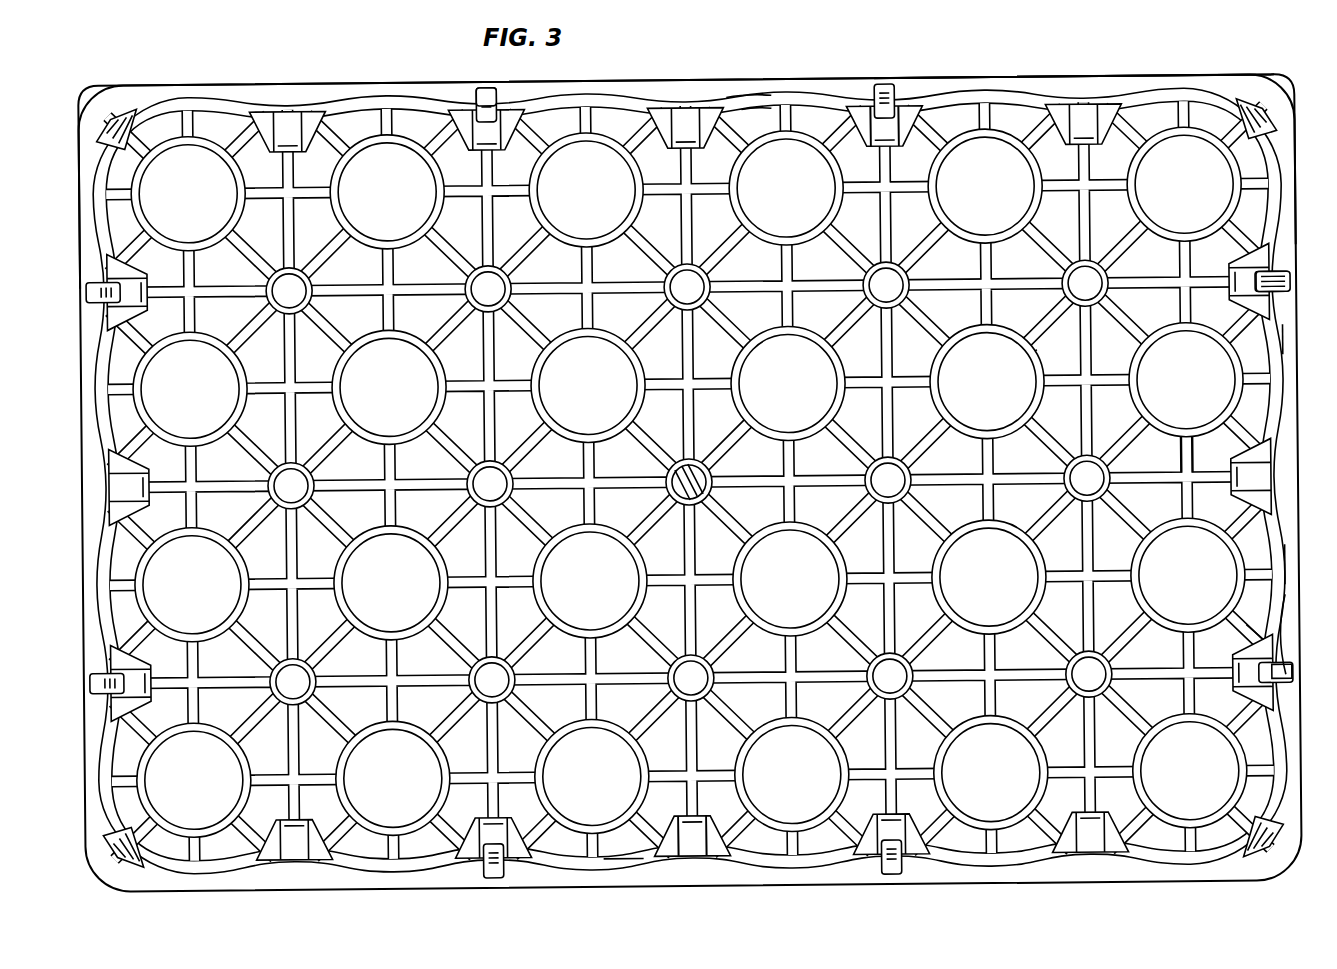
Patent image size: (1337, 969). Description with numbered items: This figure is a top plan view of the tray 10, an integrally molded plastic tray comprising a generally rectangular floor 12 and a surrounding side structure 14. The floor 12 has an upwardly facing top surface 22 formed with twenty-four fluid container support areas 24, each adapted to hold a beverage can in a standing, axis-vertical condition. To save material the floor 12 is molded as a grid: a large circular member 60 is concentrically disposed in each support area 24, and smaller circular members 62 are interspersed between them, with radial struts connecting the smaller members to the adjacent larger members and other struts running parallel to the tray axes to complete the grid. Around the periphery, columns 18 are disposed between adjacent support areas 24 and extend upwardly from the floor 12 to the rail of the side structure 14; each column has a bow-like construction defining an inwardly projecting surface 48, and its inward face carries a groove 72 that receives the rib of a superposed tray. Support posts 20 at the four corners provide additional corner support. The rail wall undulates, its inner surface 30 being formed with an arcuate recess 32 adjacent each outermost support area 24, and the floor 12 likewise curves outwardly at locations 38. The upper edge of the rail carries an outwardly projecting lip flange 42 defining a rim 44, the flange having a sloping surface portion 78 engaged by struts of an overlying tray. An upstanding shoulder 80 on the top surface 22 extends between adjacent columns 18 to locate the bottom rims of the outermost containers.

The tray 10 is at (1136, 48).
The floor 12 is at (1232, 251).
The side structure 14 is at (990, 80).
The columns 18 is at (882, 130).
The support posts 20 is at (1266, 120).
The top surface 22 is at (1186, 460).
The fluid container support areas 24 is at (556, 200).
The inner surface 30 is at (742, 104).
The arcuate recess 32 is at (765, 110).
The outwardly curving locations 38 is at (1285, 346).
The lip flange 42 is at (633, 86).
The rim 44 is at (740, 94).
The projecting surface 48 is at (876, 124).
The circular members 60 is at (547, 352).
The smaller circular members 62 is at (683, 310).
The groove 72 is at (1285, 686).
The sloping surface portion 78 is at (851, 88).
The shoulder 80 is at (1281, 210).